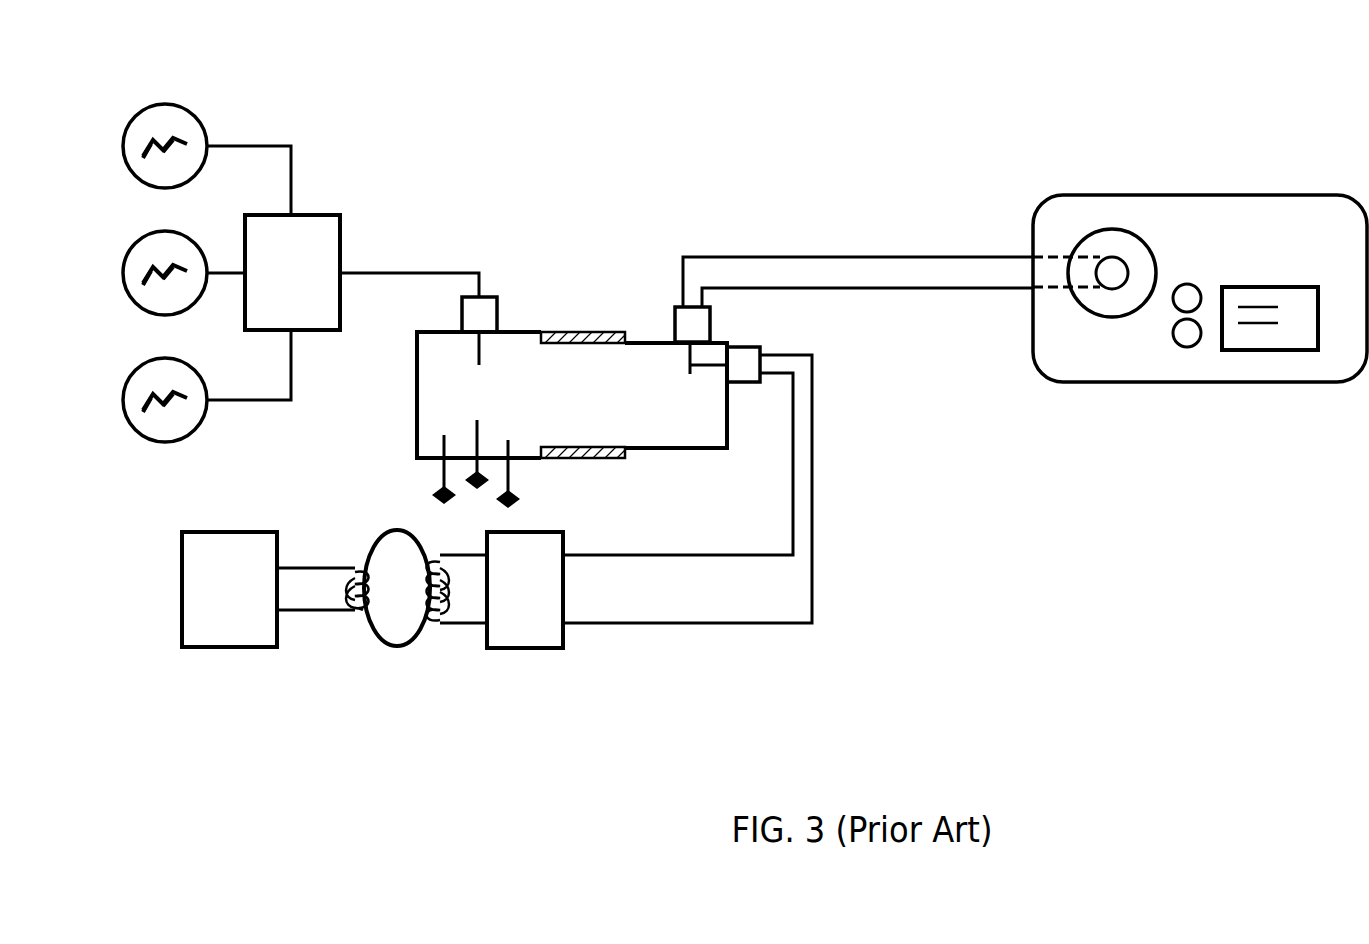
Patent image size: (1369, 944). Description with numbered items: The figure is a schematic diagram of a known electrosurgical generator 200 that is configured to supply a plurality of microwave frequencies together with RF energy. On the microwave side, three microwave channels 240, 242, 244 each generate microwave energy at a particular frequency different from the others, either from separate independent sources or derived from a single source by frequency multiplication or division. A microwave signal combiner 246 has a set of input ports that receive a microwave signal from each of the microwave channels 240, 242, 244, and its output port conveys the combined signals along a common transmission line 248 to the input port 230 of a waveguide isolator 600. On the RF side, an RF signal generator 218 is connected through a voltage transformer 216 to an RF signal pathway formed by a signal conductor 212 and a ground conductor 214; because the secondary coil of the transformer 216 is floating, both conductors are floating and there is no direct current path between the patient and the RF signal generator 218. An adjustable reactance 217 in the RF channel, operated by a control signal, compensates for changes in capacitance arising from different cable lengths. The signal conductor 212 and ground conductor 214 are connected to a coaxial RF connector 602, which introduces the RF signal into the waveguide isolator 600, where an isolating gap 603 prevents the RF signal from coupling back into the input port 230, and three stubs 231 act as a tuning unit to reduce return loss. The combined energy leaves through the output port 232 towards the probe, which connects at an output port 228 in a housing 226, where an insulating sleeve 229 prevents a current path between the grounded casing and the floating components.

The electrosurgical generator 200 is at (757, 133).
The signal conductor 212 is at (645, 560).
The ground conductor 214 is at (717, 628).
The voltage transformer 216 is at (400, 647).
The adjustable reactance 217 is at (534, 651).
The RF signal generator 218 is at (232, 532).
The housing 226 is at (1282, 194).
The output port 228 is at (1110, 230).
The insulating sleeve 229 is at (1112, 289).
The input port 230 is at (487, 297).
The stubs 231 is at (477, 428).
The output port 232 is at (675, 307).
The microwave channel 240 is at (121, 142).
The microwave channel 242 is at (121, 272).
The microwave channel 244 is at (121, 399).
The microwave signal combiner 246 is at (330, 215).
The common transmission line 248 is at (398, 271).
The waveguide isolator 600 is at (416, 410).
The coaxial RF connector 602 is at (745, 365).
The isolating gap 603 is at (587, 460).